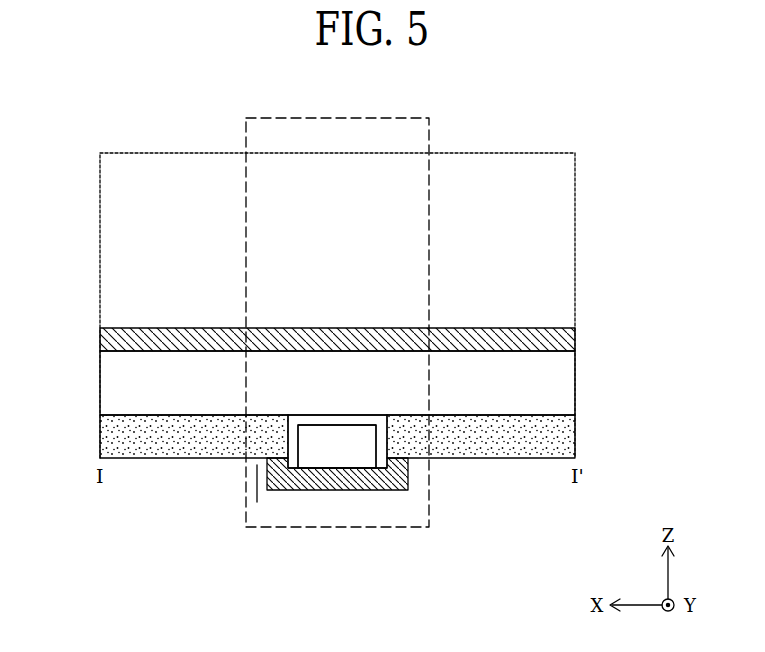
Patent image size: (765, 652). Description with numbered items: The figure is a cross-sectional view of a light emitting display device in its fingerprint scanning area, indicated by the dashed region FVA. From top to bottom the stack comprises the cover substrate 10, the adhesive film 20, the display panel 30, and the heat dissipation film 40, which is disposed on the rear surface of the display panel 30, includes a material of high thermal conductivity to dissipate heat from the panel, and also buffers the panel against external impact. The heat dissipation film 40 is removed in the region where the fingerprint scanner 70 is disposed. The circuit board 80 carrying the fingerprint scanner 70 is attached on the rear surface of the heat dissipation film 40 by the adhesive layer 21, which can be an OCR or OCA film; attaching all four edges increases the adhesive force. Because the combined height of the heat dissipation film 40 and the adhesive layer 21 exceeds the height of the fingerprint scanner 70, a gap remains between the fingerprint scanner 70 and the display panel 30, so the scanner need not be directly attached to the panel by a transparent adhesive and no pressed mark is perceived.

The cover substrate 10 is at (104, 222).
The adhesive film 20 is at (106, 343).
The adhesive layer 21 is at (401, 490).
The display panel 30 is at (110, 380).
The heat dissipation film 40 is at (102, 442).
The fingerprint scanner 70 is at (343, 450).
The circuit board 80 is at (293, 490).
The fingerprint sensing area FVA is at (429, 118).